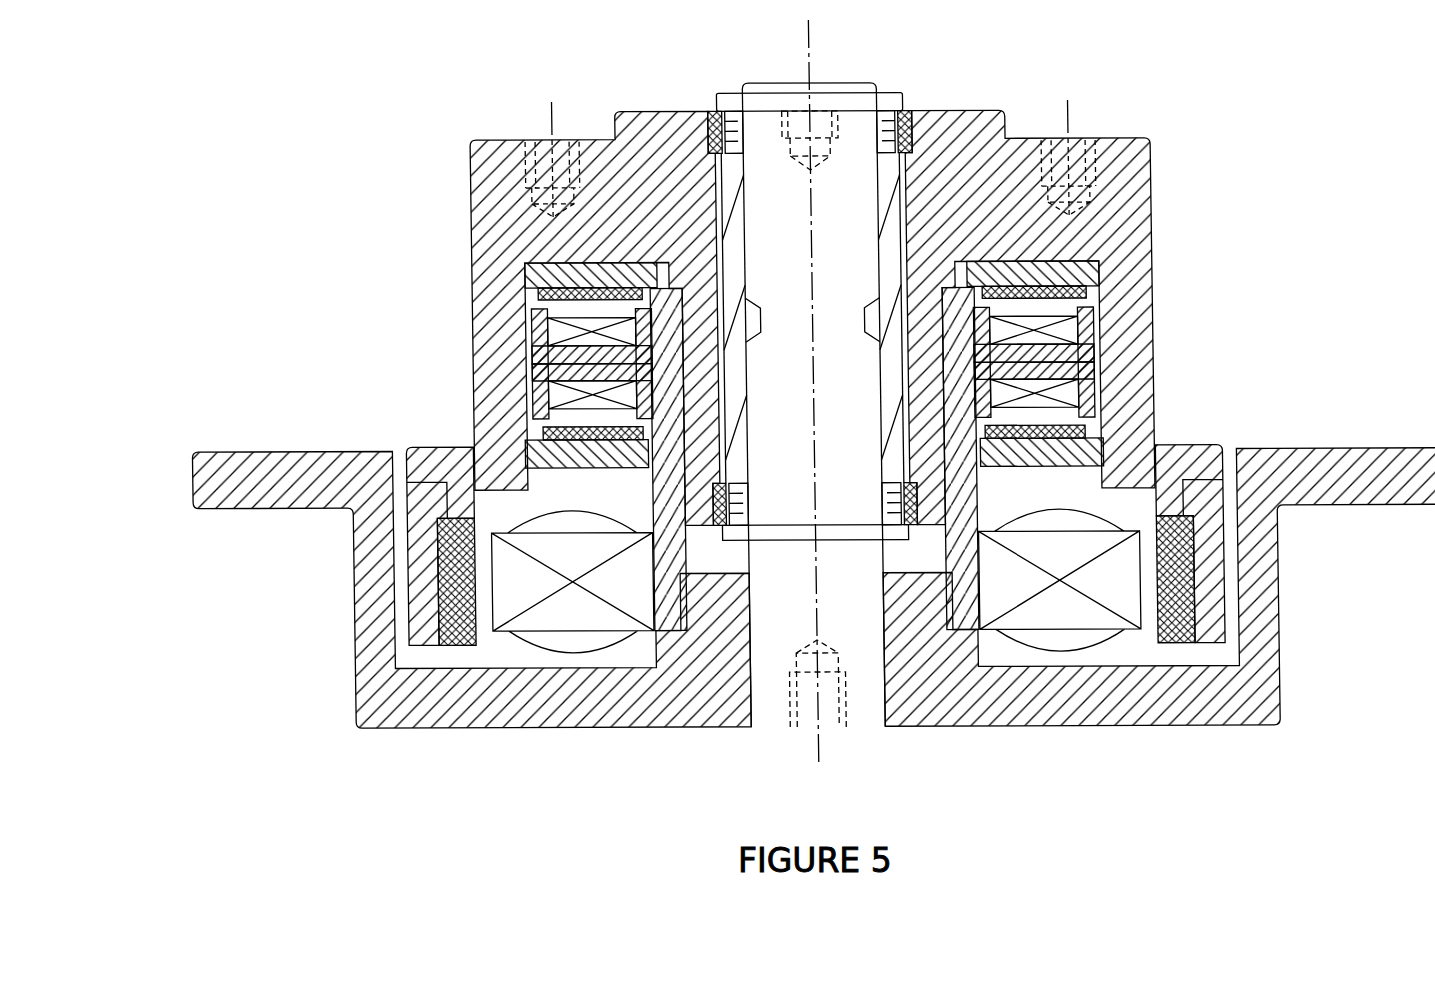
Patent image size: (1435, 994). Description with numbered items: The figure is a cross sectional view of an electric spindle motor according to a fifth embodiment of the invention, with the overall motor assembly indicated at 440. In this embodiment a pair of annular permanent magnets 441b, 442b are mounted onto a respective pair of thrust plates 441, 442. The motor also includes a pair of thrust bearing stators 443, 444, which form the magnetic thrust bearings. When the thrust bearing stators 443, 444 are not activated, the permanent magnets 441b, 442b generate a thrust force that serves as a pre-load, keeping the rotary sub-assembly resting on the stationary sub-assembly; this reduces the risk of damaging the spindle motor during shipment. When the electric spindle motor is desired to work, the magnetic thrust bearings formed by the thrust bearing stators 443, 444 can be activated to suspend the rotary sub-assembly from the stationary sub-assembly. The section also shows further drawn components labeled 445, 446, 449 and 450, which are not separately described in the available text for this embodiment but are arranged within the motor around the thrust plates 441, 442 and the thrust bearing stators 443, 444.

The spindle motor assembly 440 is at (434, 319).
The thrust plate 441 is at (1109, 269).
The annular permanent magnet 441b is at (1153, 237).
The thrust plate 442 is at (1078, 461).
The annular permanent magnet 442b is at (1046, 416).
The thrust bearing stator 443 is at (545, 344).
The thrust bearing stator 444 is at (547, 409).
The magnet 445 is at (590, 322).
The magnet 446 is at (551, 399).
The coil 449 is at (1064, 309).
The yoke 450 is at (1100, 353).